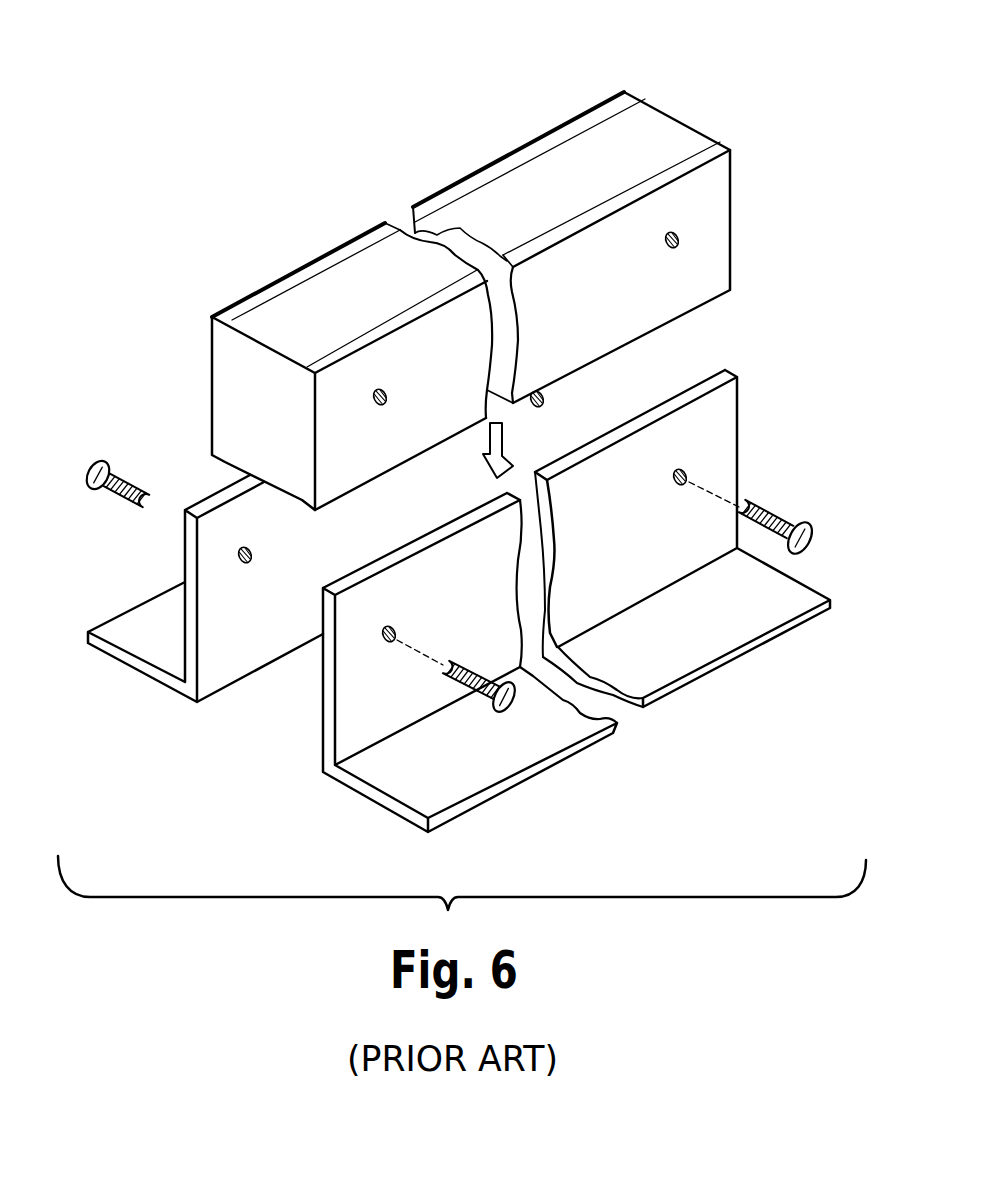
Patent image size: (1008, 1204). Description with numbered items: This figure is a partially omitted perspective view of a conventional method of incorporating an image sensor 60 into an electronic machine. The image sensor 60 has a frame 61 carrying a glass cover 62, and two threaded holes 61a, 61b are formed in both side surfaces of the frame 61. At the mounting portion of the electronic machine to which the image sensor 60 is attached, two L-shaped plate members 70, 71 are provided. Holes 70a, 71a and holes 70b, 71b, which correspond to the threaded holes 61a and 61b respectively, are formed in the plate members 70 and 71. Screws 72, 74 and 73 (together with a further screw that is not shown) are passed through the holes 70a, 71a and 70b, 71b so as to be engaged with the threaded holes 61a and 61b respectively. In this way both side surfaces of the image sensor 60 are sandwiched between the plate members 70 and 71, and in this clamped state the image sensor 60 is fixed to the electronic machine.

The image sensor 60 is at (526, 144).
The frame 61 is at (718, 198).
The glass cover 62 is at (340, 273).
The threaded hole 61a is at (390, 550).
The threaded hole 61b is at (685, 392).
The L-shaped plate member 70 is at (693, 663).
The hole 70a is at (380, 638).
The hole 70b is at (687, 468).
The L-shaped plate member 71 is at (147, 647).
The hole 71a is at (243, 567).
The hole 71b is at (545, 397).
The screw 72 is at (512, 706).
The screw 73 is at (775, 517).
The screw 74 is at (122, 472).